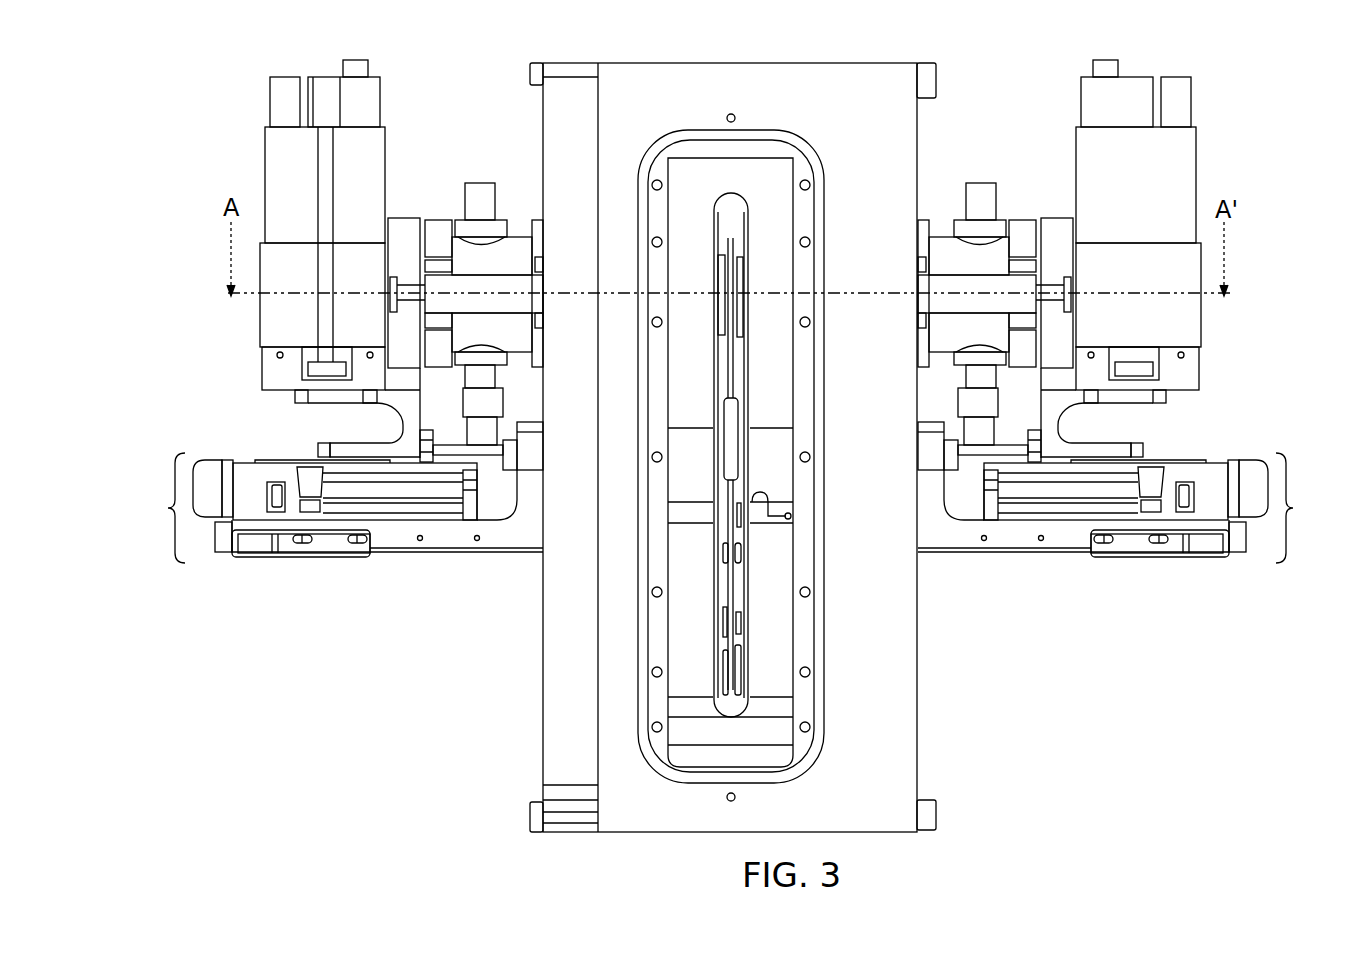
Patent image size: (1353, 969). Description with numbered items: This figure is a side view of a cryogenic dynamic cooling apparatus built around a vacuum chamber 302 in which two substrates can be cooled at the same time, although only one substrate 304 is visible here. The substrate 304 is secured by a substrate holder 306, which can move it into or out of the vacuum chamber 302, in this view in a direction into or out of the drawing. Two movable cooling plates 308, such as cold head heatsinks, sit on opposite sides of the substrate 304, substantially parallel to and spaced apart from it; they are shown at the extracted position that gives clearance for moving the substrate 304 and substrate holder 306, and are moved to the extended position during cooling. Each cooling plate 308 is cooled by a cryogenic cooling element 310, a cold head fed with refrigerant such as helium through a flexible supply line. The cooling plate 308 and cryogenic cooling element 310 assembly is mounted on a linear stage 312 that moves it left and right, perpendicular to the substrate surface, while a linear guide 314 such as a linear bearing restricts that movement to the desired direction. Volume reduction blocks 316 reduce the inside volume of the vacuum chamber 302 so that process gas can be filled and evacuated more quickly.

The vacuum chamber 302 is at (729, 62).
The substrate 304 is at (727, 238).
The substrate holder 306 is at (732, 398).
The cooling plate 308 is at (742, 282).
The cryogenic cooling element 310 is at (265, 318).
The linear stage 312 is at (170, 508).
The linear guide 314 is at (445, 285).
The volume reduction block 316 is at (775, 430).